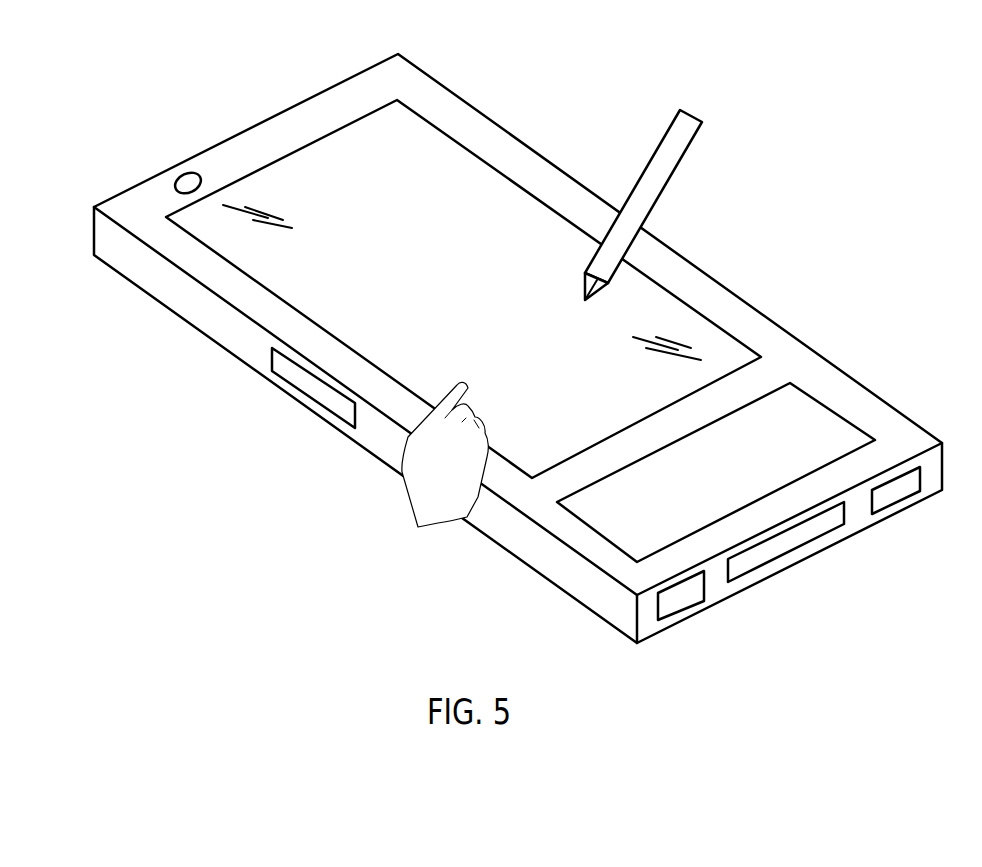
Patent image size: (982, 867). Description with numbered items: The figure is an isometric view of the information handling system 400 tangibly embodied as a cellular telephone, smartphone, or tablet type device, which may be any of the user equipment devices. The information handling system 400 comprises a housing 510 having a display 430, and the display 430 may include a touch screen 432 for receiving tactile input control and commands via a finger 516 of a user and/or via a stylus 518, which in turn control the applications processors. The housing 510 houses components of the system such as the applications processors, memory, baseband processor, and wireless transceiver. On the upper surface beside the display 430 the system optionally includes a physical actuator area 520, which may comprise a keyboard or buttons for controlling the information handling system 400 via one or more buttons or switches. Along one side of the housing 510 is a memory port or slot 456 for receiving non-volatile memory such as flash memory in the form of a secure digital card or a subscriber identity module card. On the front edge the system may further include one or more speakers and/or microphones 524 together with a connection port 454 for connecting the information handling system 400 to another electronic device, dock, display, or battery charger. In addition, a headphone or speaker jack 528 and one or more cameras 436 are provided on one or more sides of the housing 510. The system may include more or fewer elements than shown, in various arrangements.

The information handling system 400 is at (528, 92).
The housing 510 is at (343, 80).
The headphone or speaker jack 528 is at (118, 192).
The display 430 is at (398, 162).
The touch screen 432 is at (493, 301).
The camera 436 is at (182, 163).
The memory port or slot 456 is at (291, 385).
The physical actuator area 520 is at (800, 430).
The connection port 454 is at (799, 547).
The speakers and/or microphones 524 is at (688, 606).
The stylus 518 is at (662, 145).
The finger 516 is at (457, 378).